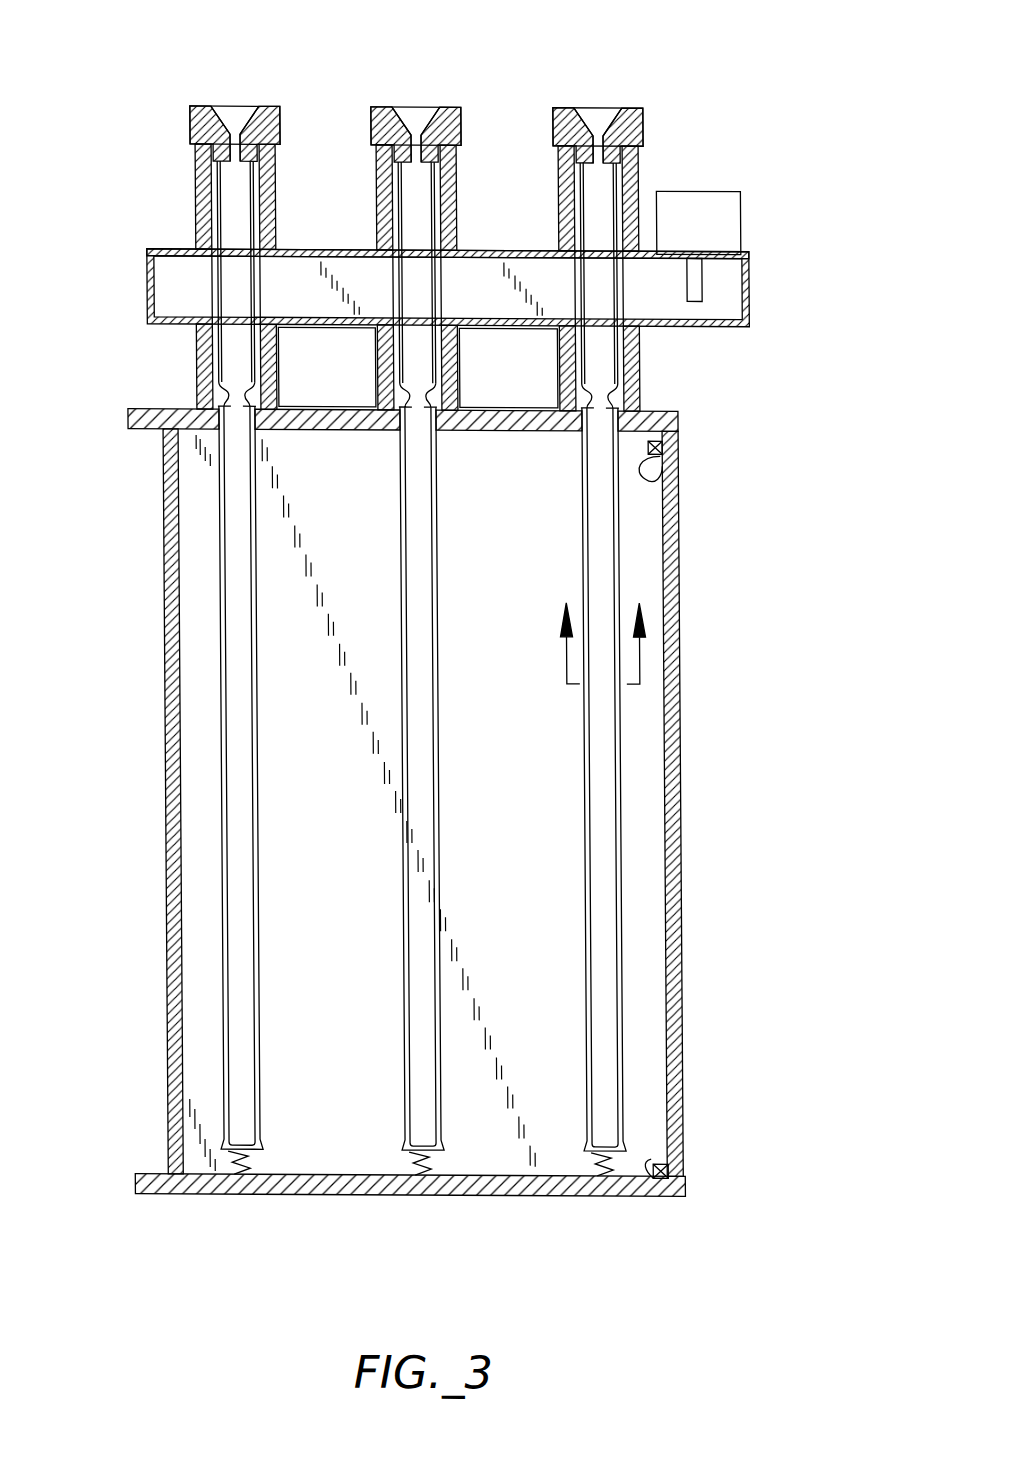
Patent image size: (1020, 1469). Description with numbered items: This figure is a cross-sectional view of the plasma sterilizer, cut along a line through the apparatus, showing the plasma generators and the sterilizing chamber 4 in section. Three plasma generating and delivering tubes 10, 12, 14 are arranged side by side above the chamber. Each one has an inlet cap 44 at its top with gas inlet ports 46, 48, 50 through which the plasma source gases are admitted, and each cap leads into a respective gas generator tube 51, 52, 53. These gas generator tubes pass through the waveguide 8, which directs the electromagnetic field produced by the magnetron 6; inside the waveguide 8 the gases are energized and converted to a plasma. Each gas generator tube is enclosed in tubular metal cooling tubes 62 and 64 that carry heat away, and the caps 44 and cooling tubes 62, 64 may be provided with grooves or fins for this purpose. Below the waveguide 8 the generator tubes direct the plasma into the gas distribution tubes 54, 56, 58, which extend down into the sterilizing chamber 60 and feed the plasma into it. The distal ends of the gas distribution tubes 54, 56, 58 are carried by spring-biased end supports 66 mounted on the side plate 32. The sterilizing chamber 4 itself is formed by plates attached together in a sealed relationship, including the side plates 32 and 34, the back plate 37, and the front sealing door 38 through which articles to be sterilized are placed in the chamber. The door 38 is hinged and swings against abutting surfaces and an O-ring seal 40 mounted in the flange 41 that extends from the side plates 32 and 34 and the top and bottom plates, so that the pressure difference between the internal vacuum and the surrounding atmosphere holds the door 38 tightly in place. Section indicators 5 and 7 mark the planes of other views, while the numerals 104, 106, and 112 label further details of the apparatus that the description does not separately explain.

The sterilizing chamber 4 is at (420, 48).
The section line 5- 5 is at (222, 683).
The magnetron 6 is at (690, 190).
The section line 7- 7 is at (398, 683).
The waveguide 8 is at (745, 325).
The plasma generating and delivering tube 10 is at (133, 287).
The plasma generating and delivering tube 12 is at (355, 182).
The plasma generating and delivering tube 14 is at (538, 167).
The side plate 32 is at (620, 1197).
The side plate 34 is at (668, 410).
The back plate 37 is at (163, 716).
The front sealing door 38 is at (678, 795).
The O-ring seal 40 is at (663, 450).
The flange 41 is at (663, 465).
The inlet cap 44 is at (192, 130).
The gas inlet port 46 is at (221, 107).
The gas inlet port 48 is at (241, 106).
The gas inlet port 50 is at (257, 107).
The gas generator tube 51 is at (228, 350).
The gas generator tube 52 is at (425, 350).
The gas generator tube 53 is at (605, 350).
The gas distribution tube 54 is at (256, 762).
The gas distribution tube 56 is at (437, 762).
The gas distribution tube 58 is at (588, 797).
The sterilizing chamber 60 is at (560, 878).
The tubular metal cooling tube 62 is at (197, 185).
The tubular metal cooling tube 64 is at (278, 382).
The spring-biased end support 66 is at (262, 1160).
The manifold top wall 104 is at (353, 252).
The chamber 106 is at (352, 326).
The sensor probe 112 is at (688, 288).